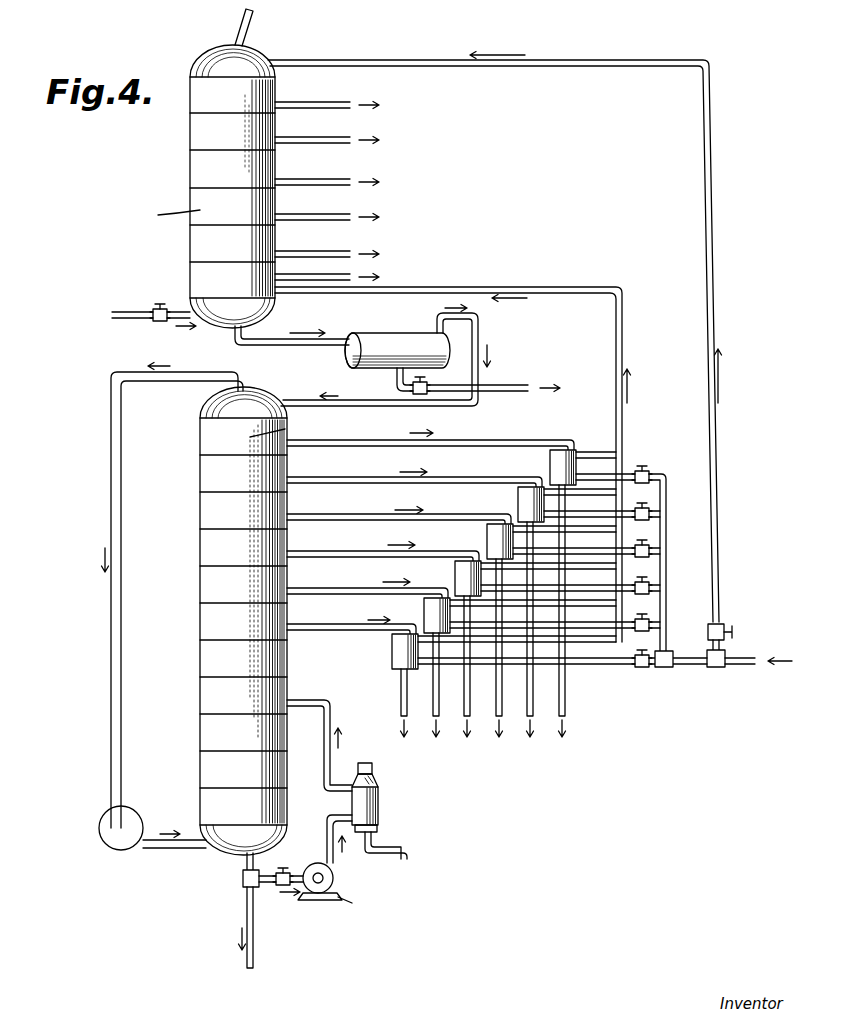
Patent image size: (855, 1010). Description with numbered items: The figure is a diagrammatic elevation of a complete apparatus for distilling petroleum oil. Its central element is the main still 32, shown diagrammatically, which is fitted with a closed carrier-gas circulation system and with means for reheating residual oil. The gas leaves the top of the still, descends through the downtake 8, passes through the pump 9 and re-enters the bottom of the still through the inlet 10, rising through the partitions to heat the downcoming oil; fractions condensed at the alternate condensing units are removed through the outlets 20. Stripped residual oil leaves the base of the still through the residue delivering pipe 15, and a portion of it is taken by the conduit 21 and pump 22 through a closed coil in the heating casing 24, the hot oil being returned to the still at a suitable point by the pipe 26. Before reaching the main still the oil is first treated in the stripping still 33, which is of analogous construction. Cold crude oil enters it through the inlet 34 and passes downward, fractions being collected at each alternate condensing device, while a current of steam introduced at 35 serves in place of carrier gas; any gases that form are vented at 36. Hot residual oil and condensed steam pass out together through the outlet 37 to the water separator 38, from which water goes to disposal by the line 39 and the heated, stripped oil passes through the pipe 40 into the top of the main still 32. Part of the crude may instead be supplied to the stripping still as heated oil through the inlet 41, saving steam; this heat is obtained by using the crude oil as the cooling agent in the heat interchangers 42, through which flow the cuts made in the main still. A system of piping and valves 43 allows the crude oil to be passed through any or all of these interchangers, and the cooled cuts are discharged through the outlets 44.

The downtake 8 is at (110, 620).
The pump 9 is at (137, 826).
The inlet 10 is at (190, 858).
The residue delivering pipe 15 is at (266, 888).
The outlet 20 is at (340, 133).
The conduit 21 is at (328, 845).
The pump 22 is at (334, 876).
The heating casing 24 is at (380, 805).
The pipe 26 is at (314, 698).
The main still 32 is at (212, 560).
The stripping still 33 is at (193, 138).
The inlet 34 is at (319, 68).
The steam inlet 35 is at (130, 321).
The vent 36 is at (234, 26).
The outlet 37 is at (310, 352).
The water separator 38 is at (390, 345).
The water outlet 39 is at (521, 382).
The oil pipe 40 is at (433, 344).
The inlet 41 is at (462, 281).
The heat interchangers 42 is at (549, 465).
The system of piping and valves 43 is at (667, 605).
The outlets 44 is at (409, 699).